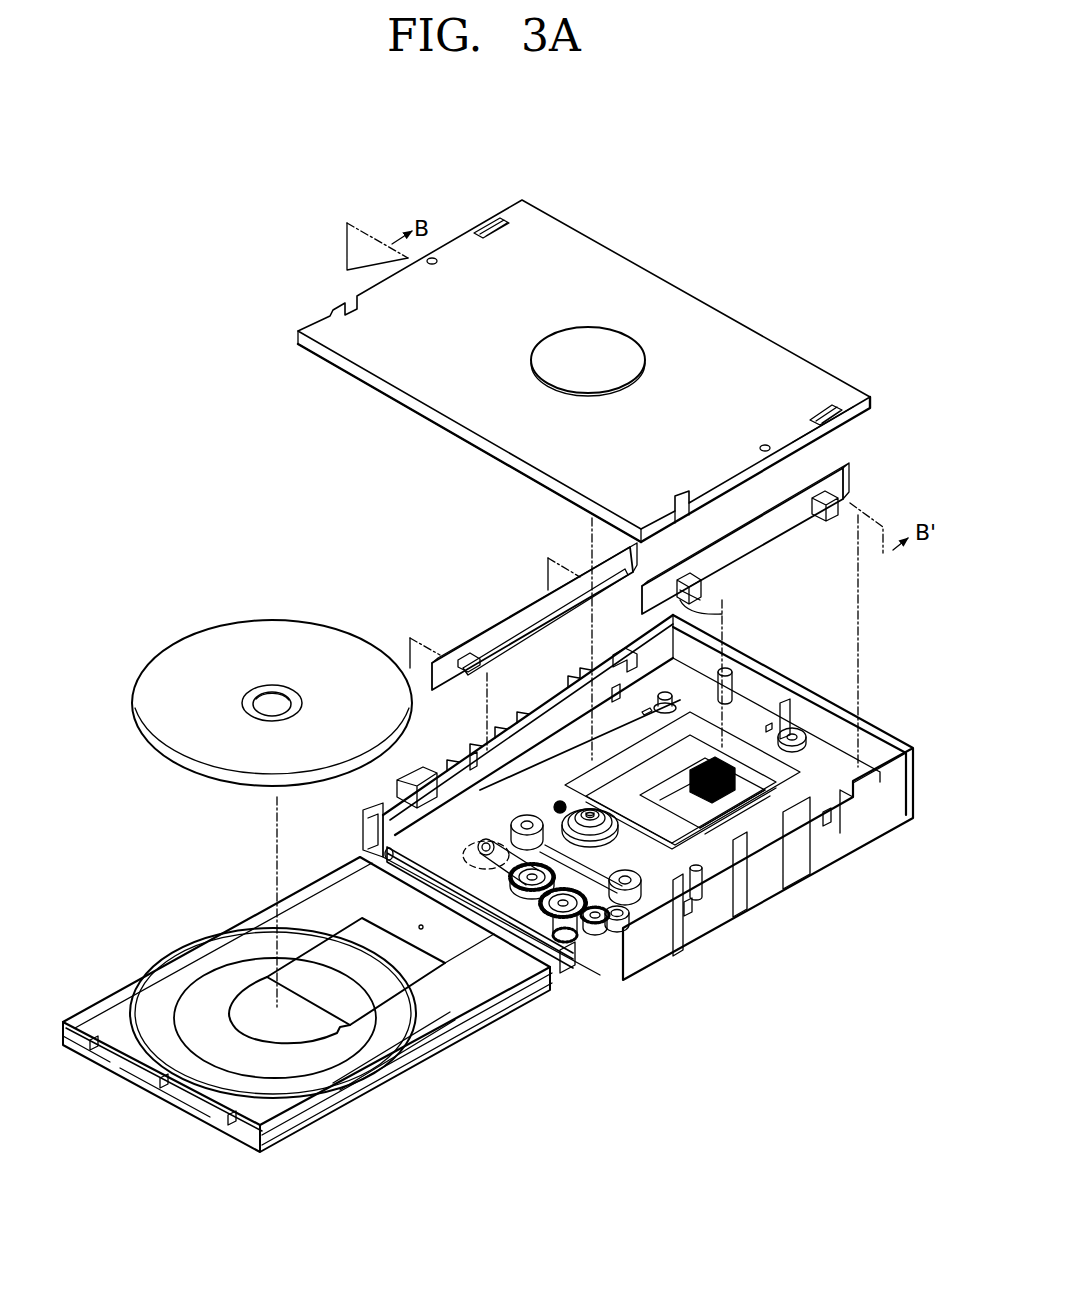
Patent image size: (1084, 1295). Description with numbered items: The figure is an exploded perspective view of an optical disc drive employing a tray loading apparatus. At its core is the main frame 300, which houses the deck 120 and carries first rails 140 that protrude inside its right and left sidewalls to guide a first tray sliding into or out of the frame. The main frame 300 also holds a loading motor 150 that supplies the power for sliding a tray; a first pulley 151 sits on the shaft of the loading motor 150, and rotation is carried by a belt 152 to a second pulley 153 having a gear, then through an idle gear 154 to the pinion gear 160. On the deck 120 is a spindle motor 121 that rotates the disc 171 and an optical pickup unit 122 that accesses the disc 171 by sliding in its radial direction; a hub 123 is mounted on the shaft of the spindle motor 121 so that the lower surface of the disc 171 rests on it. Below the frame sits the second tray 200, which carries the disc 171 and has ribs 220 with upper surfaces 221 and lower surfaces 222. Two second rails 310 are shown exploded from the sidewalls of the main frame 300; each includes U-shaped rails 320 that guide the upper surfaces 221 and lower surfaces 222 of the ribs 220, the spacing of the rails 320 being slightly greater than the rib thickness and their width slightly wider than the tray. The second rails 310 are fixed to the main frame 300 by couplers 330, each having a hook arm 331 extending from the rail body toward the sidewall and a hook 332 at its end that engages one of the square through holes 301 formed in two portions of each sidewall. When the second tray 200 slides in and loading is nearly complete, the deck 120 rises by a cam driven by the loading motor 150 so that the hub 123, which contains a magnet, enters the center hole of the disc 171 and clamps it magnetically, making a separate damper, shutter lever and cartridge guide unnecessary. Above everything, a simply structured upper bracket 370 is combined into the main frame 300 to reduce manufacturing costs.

The upper bracket 370 is at (663, 301).
The second rails 310 is at (450, 643).
The rails 320 is at (505, 640).
The couplers 330 is at (710, 592).
The hook arms 331 is at (686, 575).
The hooks 332 is at (722, 614).
The main frame 300 is at (785, 905).
The through holes 301 is at (832, 828).
The first rails 140 is at (545, 737).
The deck 120 is at (747, 723).
The spindle motor 121 is at (610, 835).
The optical pickup unit 122 is at (690, 750).
The hub 123 is at (591, 811).
The loading motor 150 is at (463, 860).
The first pulley 151 is at (486, 840).
The belt 152 is at (510, 875).
The second pulley 153 is at (440, 960).
The idle gear 154 is at (556, 925).
The pinion gear 160 is at (628, 915).
The disc 171 is at (158, 665).
The second tray 200 is at (160, 958).
The ribs 220 is at (340, 1113).
The upper surfaces 221 is at (467, 1032).
The lower surfaces 222 is at (418, 1058).